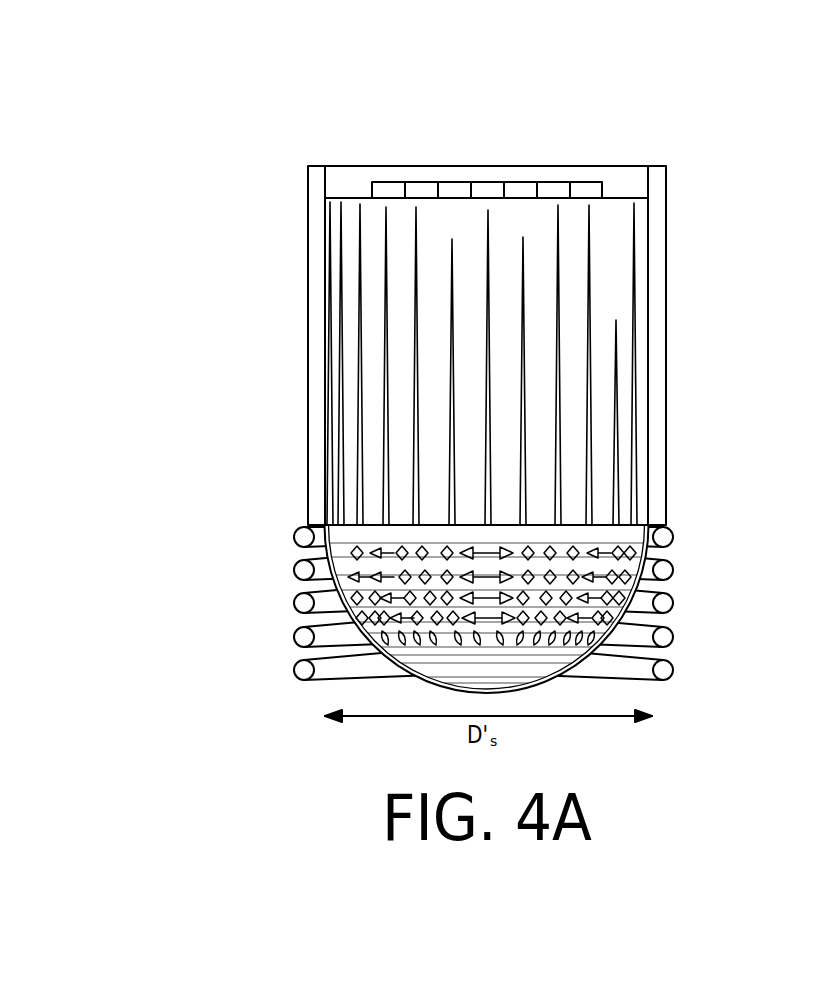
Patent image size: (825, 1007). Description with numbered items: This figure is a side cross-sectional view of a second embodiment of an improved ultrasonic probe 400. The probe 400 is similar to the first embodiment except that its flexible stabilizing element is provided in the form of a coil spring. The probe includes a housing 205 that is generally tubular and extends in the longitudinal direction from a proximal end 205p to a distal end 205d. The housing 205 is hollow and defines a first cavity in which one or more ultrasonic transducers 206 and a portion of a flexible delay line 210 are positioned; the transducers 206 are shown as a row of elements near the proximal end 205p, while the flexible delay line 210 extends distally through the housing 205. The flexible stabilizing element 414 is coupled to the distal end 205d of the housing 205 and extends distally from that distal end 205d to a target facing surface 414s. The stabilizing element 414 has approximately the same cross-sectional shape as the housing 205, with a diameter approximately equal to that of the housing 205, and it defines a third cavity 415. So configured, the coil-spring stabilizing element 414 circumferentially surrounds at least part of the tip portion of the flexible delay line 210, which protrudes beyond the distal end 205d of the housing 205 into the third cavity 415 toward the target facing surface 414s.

The ultrasonic probe 400 is at (586, 132).
The housing 205 is at (316, 222).
The proximal end 205p is at (688, 162).
The distal end 205d is at (694, 508).
The ultrasonic transducers 206 is at (445, 190).
The flexible delay line 210 is at (348, 600).
The flexible stabilizing element 414 is at (278, 533).
The third cavity 415 is at (660, 626).
The target facing surface 414s is at (668, 677).